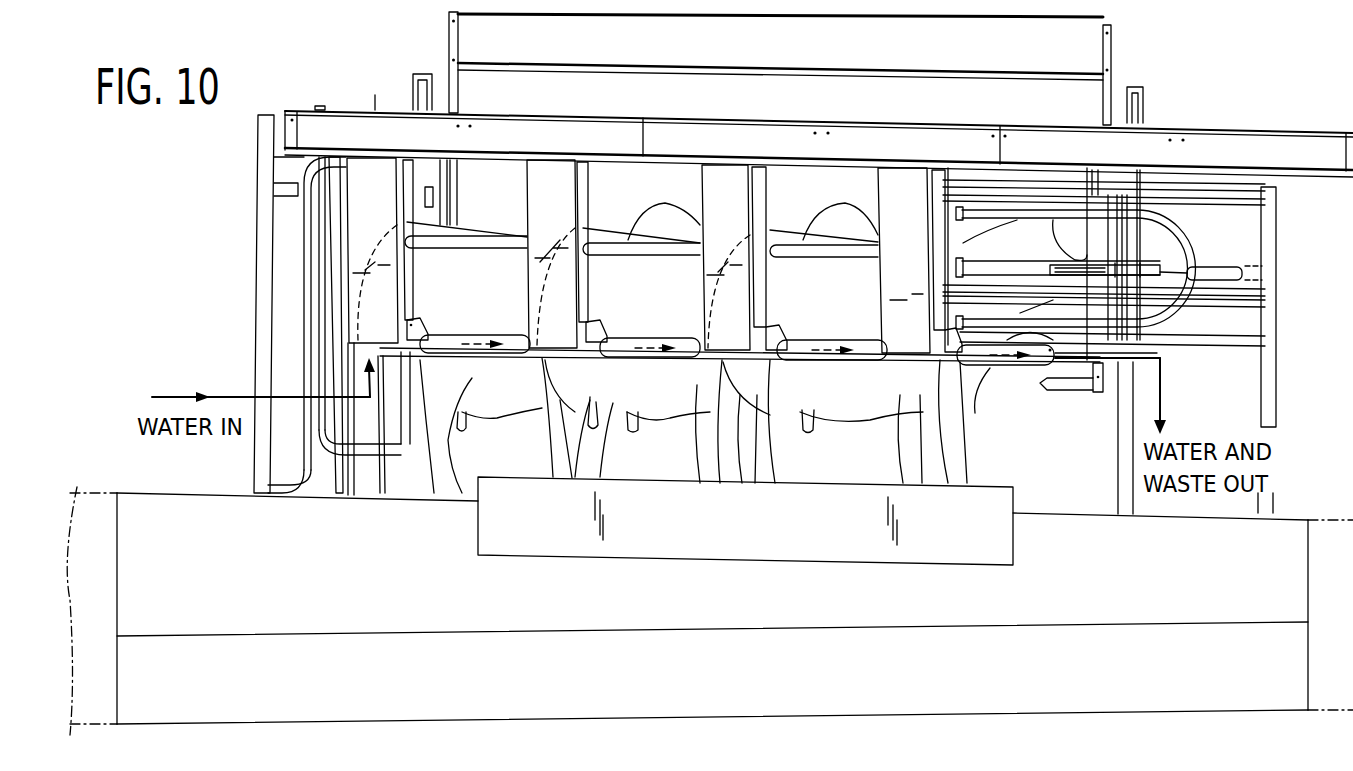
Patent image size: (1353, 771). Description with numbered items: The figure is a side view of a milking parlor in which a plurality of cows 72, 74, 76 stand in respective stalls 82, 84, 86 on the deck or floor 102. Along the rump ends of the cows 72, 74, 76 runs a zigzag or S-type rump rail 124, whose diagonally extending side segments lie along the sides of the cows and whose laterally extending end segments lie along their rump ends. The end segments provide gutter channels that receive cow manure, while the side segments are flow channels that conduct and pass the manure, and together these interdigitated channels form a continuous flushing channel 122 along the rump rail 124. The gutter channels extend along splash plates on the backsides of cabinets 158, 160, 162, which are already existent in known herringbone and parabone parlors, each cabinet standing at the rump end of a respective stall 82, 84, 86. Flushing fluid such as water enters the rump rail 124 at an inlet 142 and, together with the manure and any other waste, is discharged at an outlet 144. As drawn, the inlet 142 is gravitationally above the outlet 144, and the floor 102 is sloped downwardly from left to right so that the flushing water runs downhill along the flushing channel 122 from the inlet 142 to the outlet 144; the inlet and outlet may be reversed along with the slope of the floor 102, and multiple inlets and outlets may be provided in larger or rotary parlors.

The cow 72 is at (520, 400).
The cow 74 is at (690, 403).
The cow 76 is at (886, 405).
The stall 82 is at (520, 465).
The stall 84 is at (688, 465).
The stall 86 is at (873, 470).
The floor 102 is at (1053, 512).
The flushing channel 122 is at (653, 352).
The zigzag rump rail 124 is at (853, 334).
The inlet 142 is at (377, 352).
The outlet 144 is at (1028, 365).
The cabinet 158 is at (388, 210).
The cabinet 160 is at (566, 210).
The cabinet 162 is at (746, 216).